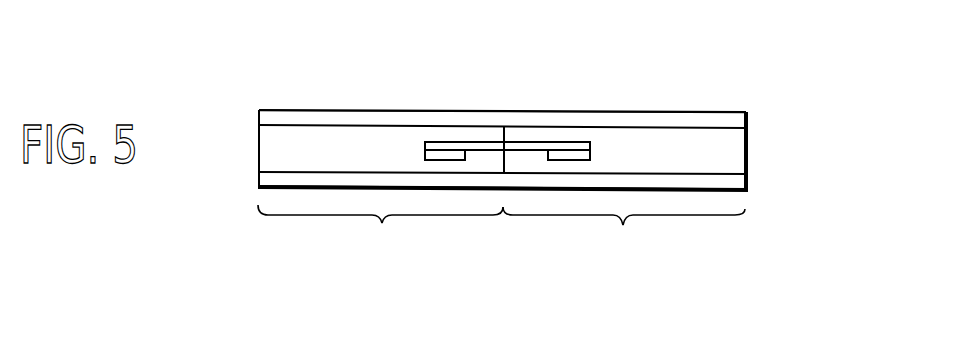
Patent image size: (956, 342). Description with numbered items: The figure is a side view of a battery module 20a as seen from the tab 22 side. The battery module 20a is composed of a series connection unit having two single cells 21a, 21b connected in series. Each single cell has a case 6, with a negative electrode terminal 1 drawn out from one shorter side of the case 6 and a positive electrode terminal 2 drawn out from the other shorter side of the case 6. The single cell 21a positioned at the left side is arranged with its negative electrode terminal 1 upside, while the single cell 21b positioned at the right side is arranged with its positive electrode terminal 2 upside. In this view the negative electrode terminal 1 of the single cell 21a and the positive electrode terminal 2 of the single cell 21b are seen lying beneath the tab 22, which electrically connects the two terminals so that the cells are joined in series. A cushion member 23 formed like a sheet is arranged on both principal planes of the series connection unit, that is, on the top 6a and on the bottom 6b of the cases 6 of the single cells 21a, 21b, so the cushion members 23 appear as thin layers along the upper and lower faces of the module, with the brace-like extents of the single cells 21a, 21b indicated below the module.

The battery module 20a is at (501, 73).
The negative electrode terminal 1 is at (587, 152).
The positive electrode terminal 2 is at (426, 154).
The tab 22 is at (540, 142).
The case 6 is at (265, 151).
The top of the case 6a is at (745, 130).
The bottom of the case 6b is at (745, 173).
The cushion member 23 is at (741, 118).
The single cell 21a is at (380, 232).
The single cell 21b is at (624, 233).